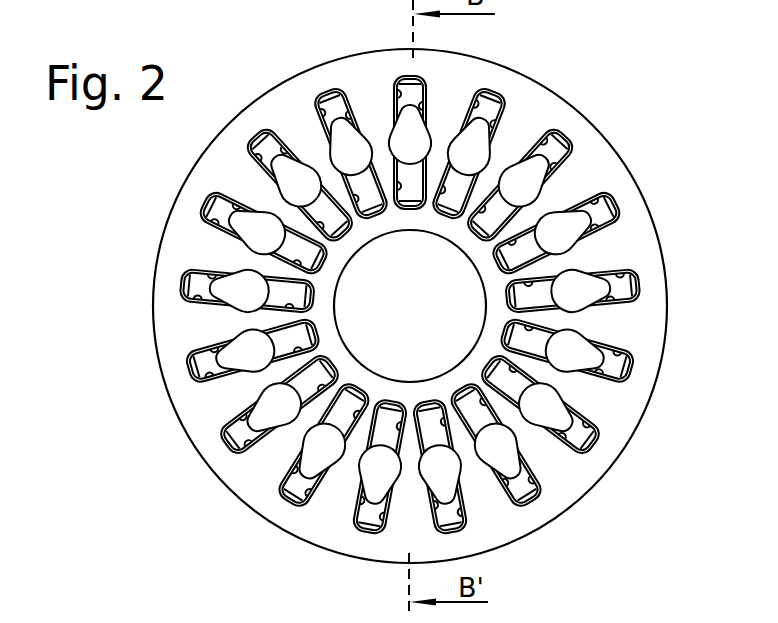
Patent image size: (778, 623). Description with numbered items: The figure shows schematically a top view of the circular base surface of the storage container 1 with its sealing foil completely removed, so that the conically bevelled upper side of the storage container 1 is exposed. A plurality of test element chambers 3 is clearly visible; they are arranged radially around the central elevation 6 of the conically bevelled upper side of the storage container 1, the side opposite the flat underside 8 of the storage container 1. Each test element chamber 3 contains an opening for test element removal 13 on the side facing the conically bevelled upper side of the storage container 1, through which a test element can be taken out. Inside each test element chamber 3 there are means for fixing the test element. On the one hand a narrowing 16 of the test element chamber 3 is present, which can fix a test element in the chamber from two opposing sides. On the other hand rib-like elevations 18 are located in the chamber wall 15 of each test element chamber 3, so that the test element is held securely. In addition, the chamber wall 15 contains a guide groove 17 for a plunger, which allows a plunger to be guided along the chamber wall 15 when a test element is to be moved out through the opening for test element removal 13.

The storage container 1 is at (616, 118).
The test element chamber 3 is at (638, 283).
The elevation on the conically bevelled upper side 6 is at (452, 342).
The flat underside of the storage container 8 is at (481, 104).
The opening for test element removal 13 is at (574, 158).
The chamber wall of the test element chamber 15 is at (594, 353).
The narrowing of the test element chamber 16 is at (267, 378).
The guide groove for plunger 17 is at (539, 447).
The rib-like elevation in the chamber wall 18 is at (538, 262).